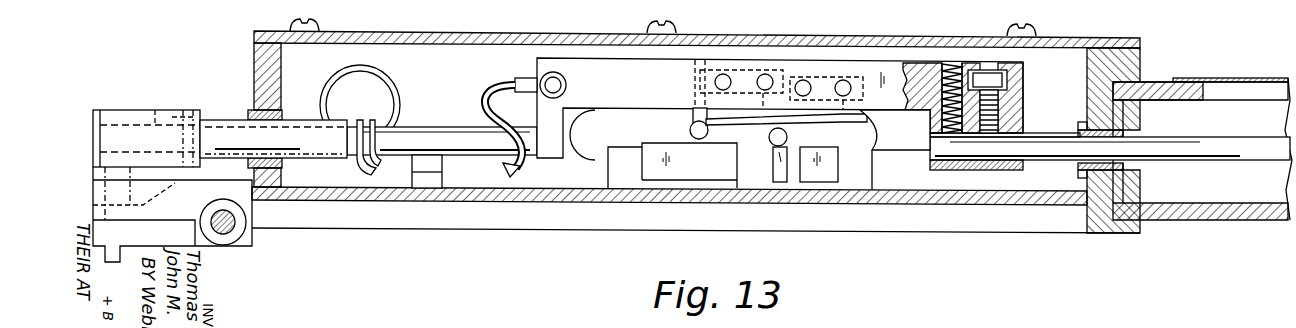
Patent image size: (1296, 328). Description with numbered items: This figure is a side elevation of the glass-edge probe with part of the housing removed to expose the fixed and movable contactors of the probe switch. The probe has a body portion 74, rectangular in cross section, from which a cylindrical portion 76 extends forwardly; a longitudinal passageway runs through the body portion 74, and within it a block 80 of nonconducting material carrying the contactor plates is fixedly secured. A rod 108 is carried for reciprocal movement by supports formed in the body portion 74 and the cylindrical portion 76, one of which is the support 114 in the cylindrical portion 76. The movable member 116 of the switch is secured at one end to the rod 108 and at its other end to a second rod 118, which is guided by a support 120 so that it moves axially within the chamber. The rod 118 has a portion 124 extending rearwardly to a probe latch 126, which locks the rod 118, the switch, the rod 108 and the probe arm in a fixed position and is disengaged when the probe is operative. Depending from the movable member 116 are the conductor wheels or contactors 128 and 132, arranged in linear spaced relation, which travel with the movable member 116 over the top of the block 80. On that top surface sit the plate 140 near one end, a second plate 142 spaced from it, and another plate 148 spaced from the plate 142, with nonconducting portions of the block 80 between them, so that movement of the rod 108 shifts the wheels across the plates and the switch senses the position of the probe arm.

The body portion 74 is at (1057, 38).
The cylindrical portion 76 is at (1150, 82).
The block 80 is at (876, 165).
The rod 108 is at (1187, 165).
The support 114 is at (1118, 116).
The movable member 116 is at (637, 96).
The rod 118 is at (447, 105).
The support 120 is at (280, 85).
The portion 124 is at (222, 130).
The probe latch 126 is at (147, 110).
The contactor wheel 128 is at (790, 137).
The contactor 132 is at (692, 129).
The plate 140 is at (709, 174).
The plate 142 is at (784, 184).
The plate 148 is at (818, 184).